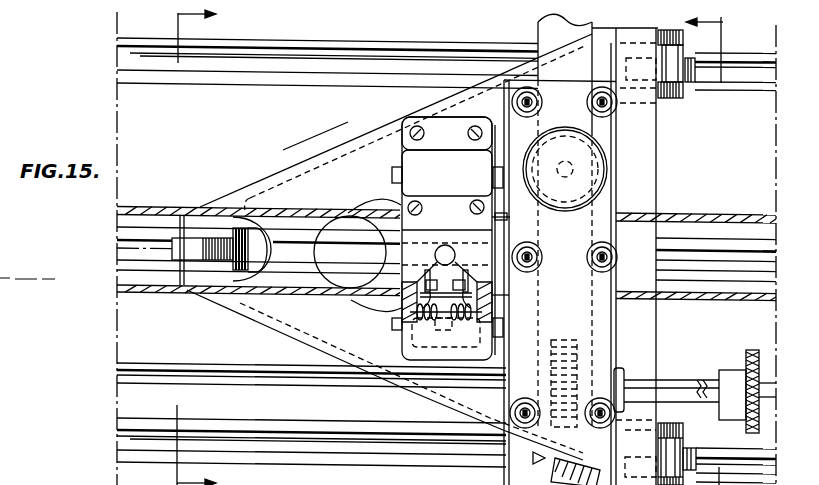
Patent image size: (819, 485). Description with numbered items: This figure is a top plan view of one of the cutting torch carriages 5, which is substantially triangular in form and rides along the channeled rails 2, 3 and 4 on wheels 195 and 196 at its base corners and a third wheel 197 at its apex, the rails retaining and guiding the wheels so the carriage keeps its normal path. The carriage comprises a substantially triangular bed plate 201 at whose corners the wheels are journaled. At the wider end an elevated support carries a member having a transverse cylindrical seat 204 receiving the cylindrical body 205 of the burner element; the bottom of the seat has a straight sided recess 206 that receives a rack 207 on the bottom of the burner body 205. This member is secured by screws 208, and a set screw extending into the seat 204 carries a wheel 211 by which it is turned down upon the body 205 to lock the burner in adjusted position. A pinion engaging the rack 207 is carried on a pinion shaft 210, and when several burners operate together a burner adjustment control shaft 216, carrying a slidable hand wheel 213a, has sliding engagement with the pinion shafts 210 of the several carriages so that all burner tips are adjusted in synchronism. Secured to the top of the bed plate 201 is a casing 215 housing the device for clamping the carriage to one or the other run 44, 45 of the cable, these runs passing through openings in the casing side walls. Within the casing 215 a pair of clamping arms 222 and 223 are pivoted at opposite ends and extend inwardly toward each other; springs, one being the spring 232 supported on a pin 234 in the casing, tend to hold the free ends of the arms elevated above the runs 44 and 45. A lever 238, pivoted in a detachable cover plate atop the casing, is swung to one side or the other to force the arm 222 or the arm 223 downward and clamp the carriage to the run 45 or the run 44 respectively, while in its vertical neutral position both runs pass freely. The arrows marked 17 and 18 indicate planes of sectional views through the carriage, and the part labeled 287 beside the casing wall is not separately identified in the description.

The rail 2 is at (244, 79).
The rail 3 is at (328, 257).
The rail 4 is at (254, 423).
The carriage 5 is at (320, 131).
The section line 17- 17 is at (181, 243).
The section line 18- 18 is at (720, 249).
The run of the cable 44 is at (127, 291).
The run of the cable 45 is at (168, 208).
The wheel 195 is at (694, 82).
The wheel 196 is at (690, 452).
The third wheel 197 is at (197, 247).
The bed plate 201 is at (262, 336).
The transverse cylindrical seat 204 is at (594, 213).
The cylindrical body 205 is at (538, 22).
The straight sided recess 206 is at (608, 368).
The rack 207 is at (556, 345).
The screws 208 is at (609, 110).
The pinion shaft 210 is at (615, 382).
The wheel 211 is at (606, 170).
The hand wheel 213a is at (746, 350).
The casing 215 is at (417, 163).
The burner adjustment control shaft 216 is at (187, 367).
The clamping arm 222 is at (452, 248).
The clamping arm 223 is at (470, 315).
The spring 232 is at (406, 312).
The pin 234 is at (400, 337).
The cam lever 287 is at (374, 205).
The lever 238 is at (444, 245).